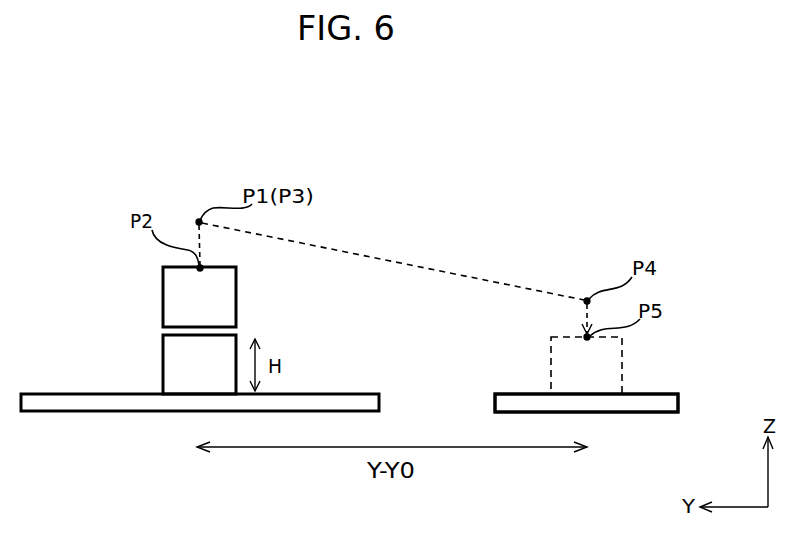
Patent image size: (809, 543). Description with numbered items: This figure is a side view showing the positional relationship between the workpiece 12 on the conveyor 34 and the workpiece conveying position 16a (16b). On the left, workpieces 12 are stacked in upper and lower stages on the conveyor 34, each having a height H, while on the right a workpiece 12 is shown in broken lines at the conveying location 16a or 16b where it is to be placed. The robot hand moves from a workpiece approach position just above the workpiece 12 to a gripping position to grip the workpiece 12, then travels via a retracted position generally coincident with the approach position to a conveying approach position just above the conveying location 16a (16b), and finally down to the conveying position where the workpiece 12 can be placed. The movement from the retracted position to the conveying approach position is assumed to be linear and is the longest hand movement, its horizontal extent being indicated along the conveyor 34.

The workpiece 12 is at (143, 268).
The conveyor 34 is at (43, 411).
The transport destination 16a is at (638, 412).
The transport destination 16b is at (586, 403).